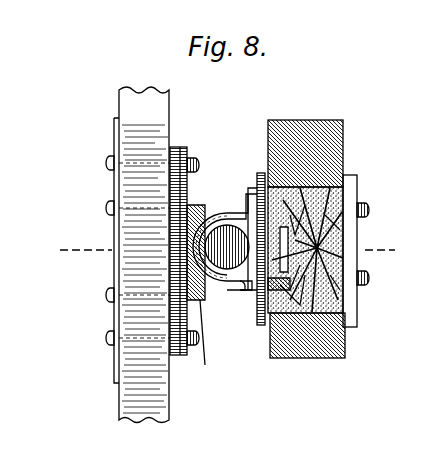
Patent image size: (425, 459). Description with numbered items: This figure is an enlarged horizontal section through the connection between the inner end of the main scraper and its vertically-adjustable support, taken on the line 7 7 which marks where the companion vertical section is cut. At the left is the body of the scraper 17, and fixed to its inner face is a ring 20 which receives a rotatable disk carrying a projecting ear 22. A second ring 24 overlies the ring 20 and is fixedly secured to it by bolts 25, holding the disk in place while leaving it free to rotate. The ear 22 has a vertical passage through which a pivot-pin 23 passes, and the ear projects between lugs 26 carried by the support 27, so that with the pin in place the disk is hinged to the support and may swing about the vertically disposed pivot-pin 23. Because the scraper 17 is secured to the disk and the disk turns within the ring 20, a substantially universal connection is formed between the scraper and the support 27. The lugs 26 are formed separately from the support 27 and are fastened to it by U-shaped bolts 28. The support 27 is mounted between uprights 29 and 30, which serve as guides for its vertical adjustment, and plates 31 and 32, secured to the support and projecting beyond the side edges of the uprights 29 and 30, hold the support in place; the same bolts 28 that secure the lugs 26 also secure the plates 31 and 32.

The section line 7 7 is at (232, 251).
The scraper 17 is at (120, 415).
The ring 20 is at (180, 355).
The ear 22 is at (207, 295).
The pivot-pin 23 is at (229, 270).
The ring 24 is at (200, 163).
The bolts 25 is at (110, 338).
The lugs 26 is at (243, 292).
The support 27 is at (330, 263).
The U-shaped bolts 28 is at (240, 218).
The upright 29 is at (328, 150).
The upright 30 is at (335, 358).
The plate 31 is at (255, 170).
The plate 32 is at (350, 190).